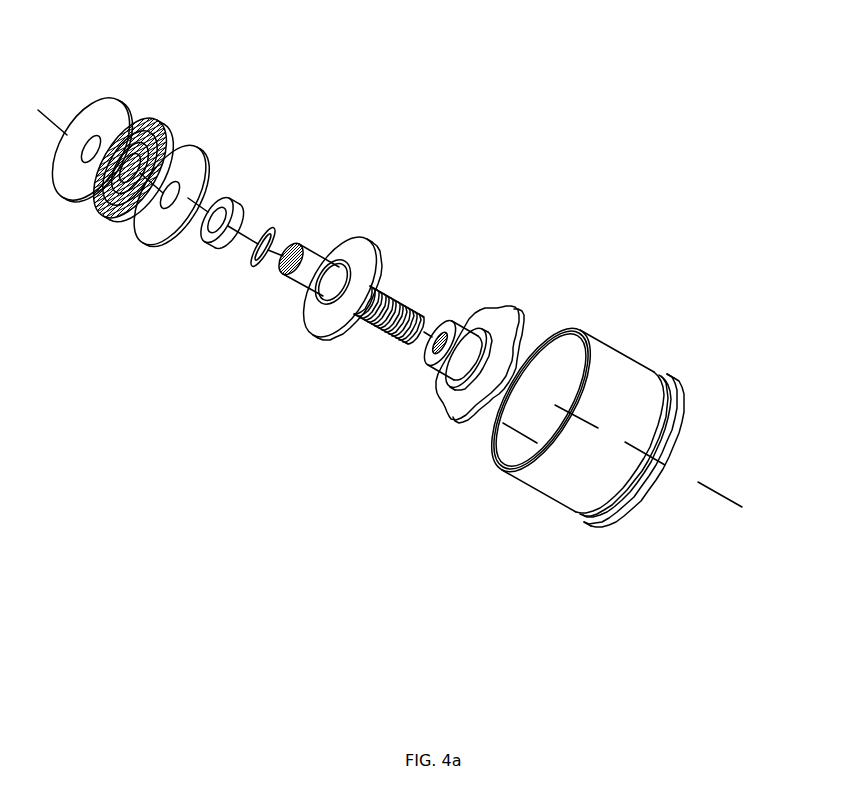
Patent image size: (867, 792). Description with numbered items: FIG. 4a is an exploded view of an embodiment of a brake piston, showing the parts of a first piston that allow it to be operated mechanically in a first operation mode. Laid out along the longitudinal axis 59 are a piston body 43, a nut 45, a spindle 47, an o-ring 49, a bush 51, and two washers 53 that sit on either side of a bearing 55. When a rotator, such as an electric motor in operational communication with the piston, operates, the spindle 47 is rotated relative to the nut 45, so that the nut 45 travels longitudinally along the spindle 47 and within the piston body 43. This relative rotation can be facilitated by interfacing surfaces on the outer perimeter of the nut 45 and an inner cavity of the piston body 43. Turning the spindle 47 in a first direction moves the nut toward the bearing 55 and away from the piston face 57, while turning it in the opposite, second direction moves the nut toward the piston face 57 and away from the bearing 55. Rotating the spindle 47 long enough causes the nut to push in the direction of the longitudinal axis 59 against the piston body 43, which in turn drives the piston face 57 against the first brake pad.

The piston body 43 is at (630, 372).
The nut 45 is at (513, 312).
The spindle 47 is at (400, 298).
The o-ring 49 is at (288, 228).
The bush 51 is at (235, 203).
The washers 53 is at (117, 100).
The bearing 55 is at (169, 130).
The piston face 57 is at (640, 500).
The longitudinal axis 59 is at (742, 507).